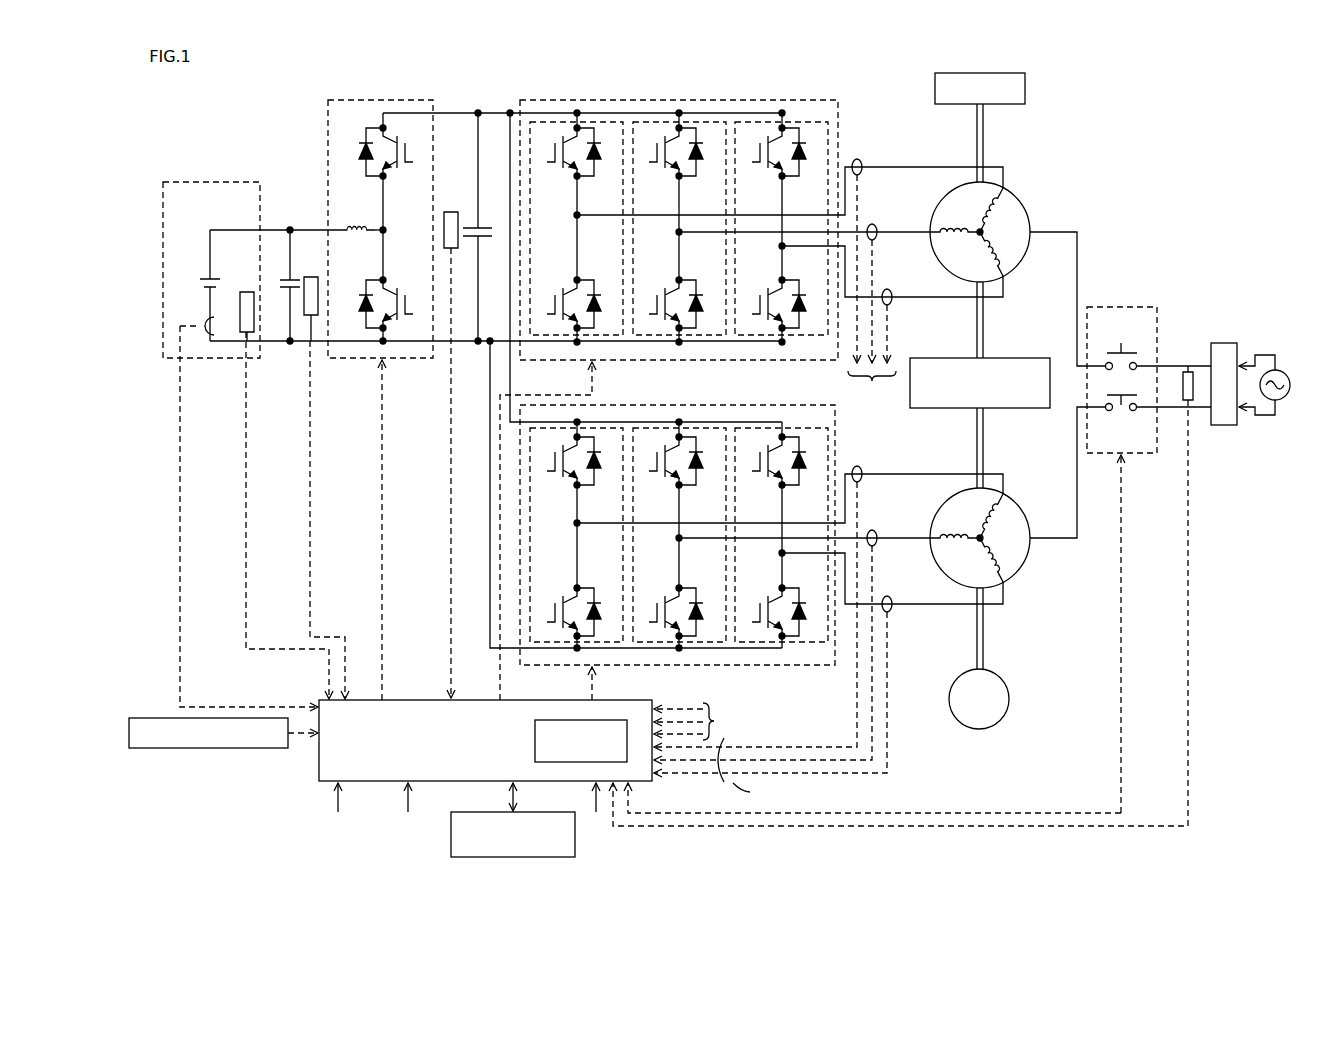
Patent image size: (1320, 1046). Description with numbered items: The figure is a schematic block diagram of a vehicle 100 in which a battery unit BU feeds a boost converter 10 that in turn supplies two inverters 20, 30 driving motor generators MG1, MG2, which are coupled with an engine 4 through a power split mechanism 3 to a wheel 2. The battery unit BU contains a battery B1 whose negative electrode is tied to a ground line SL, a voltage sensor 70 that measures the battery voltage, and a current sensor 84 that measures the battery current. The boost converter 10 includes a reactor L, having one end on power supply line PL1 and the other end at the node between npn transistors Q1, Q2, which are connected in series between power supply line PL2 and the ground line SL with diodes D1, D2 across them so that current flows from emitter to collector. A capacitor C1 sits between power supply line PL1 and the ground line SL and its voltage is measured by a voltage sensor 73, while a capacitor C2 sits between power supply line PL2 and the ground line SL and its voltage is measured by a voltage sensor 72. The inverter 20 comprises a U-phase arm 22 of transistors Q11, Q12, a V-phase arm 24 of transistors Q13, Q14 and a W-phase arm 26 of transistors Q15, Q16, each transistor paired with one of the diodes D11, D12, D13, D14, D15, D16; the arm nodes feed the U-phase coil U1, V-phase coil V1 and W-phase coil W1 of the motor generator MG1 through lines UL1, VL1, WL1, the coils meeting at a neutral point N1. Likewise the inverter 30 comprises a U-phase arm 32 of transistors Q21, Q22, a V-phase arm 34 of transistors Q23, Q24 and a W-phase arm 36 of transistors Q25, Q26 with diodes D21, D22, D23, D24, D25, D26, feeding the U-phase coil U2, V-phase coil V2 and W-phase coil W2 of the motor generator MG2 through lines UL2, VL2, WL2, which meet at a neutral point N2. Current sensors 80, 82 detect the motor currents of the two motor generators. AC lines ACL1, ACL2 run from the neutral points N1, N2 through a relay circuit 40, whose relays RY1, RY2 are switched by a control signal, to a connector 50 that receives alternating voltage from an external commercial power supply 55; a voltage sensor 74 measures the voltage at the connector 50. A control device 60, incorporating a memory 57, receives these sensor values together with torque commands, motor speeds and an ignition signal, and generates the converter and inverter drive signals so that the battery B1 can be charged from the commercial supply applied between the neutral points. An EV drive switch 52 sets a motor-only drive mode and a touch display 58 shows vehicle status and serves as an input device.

The vehicle 100 is at (1193, 103).
The battery unit BU is at (192, 181).
The battery B1 is at (208, 276).
The power supply line PL1 is at (226, 229).
The power supply line PL2 is at (503, 111).
The ground line SL is at (305, 343).
The current sensor 84 is at (214, 340).
The voltage sensor 70 is at (247, 292).
The voltage sensor 73 is at (311, 277).
The voltage sensor 72 is at (451, 212).
The voltage sensor 74 is at (1192, 402).
The capacitor C1 is at (289, 278).
The capacitor C2 is at (485, 226).
The reactor L is at (346, 229).
The boost converter 10 is at (334, 360).
The npn transistor Q1 is at (397, 165).
The npn transistor Q2 is at (397, 287).
The diode D1 is at (366, 163).
The diode D2 is at (366, 290).
The inverter 20 is at (679, 233).
The U-phase arm 22 is at (590, 100).
The V-phase arm 24 is at (692, 100).
The W-phase arm 26 is at (795, 100).
The inverter 30 is at (677, 536).
The U-phase arm 32 is at (606, 427).
The V-phase arm 34 is at (706, 427).
The W-phase arm 36 is at (808, 427).
The npn transistor Q11 is at (553, 176).
The npn transistor Q12 is at (553, 283).
The npn transistor Q13 is at (655, 176).
The npn transistor Q14 is at (655, 283).
The npn transistor Q15 is at (758, 176).
The npn transistor Q16 is at (758, 283).
The diode D11 is at (596, 176).
The diode D12 is at (596, 283).
The diode D13 is at (698, 176).
The diode D14 is at (698, 283).
The diode D15 is at (801, 176).
The diode D16 is at (801, 283).
The npn transistor Q21 is at (553, 485).
The npn transistor Q22 is at (553, 591).
The npn transistor Q23 is at (655, 485).
The npn transistor Q24 is at (655, 591).
The npn transistor Q25 is at (758, 485).
The npn transistor Q26 is at (758, 591).
The diode D21 is at (596, 485).
The diode D22 is at (596, 591).
The diode D23 is at (698, 485).
The diode D24 is at (698, 591).
The diode D25 is at (801, 485).
The diode D26 is at (801, 591).
The current sensor 80 is at (862, 160).
The current sensor 82 is at (862, 466).
The motor generator MG1 is at (1000, 257).
The motor generator MG2 is at (1000, 563).
The U-phase coil U1 is at (999, 209).
The V-phase coil V1 is at (955, 220).
The W-phase coil W1 is at (984, 253).
The neutral point N1 is at (977, 238).
The U-phase coil U2 is at (999, 515).
The V-phase coil V2 is at (955, 526).
The W-phase coil W2 is at (984, 559).
The neutral point N2 is at (977, 544).
The U-phase line UL1 is at (995, 166).
The V-phase line VL1 is at (919, 229).
The W-phase line WL1 is at (996, 300).
The U-phase line UL2 is at (995, 473).
The V-phase line VL2 is at (919, 535).
The W-phase line WL2 is at (996, 606).
The AC line ACL1 is at (1080, 252).
The AC line ACL2 is at (1053, 545).
The engine 4 is at (1026, 89).
The power split mechanism 3 is at (1012, 357).
The wheel 2 is at (1010, 699).
The relay circuit 40 is at (1149, 362).
The relay RY1 is at (1159, 344).
The relay RY2 is at (1159, 422).
The connector 50 is at (1223, 343).
The commercial power supply 55 is at (1285, 401).
The control device 60 is at (485, 716).
The memory 57 is at (563, 719).
The touch display 58 is at (534, 812).
The EV drive switch 52 is at (250, 749).